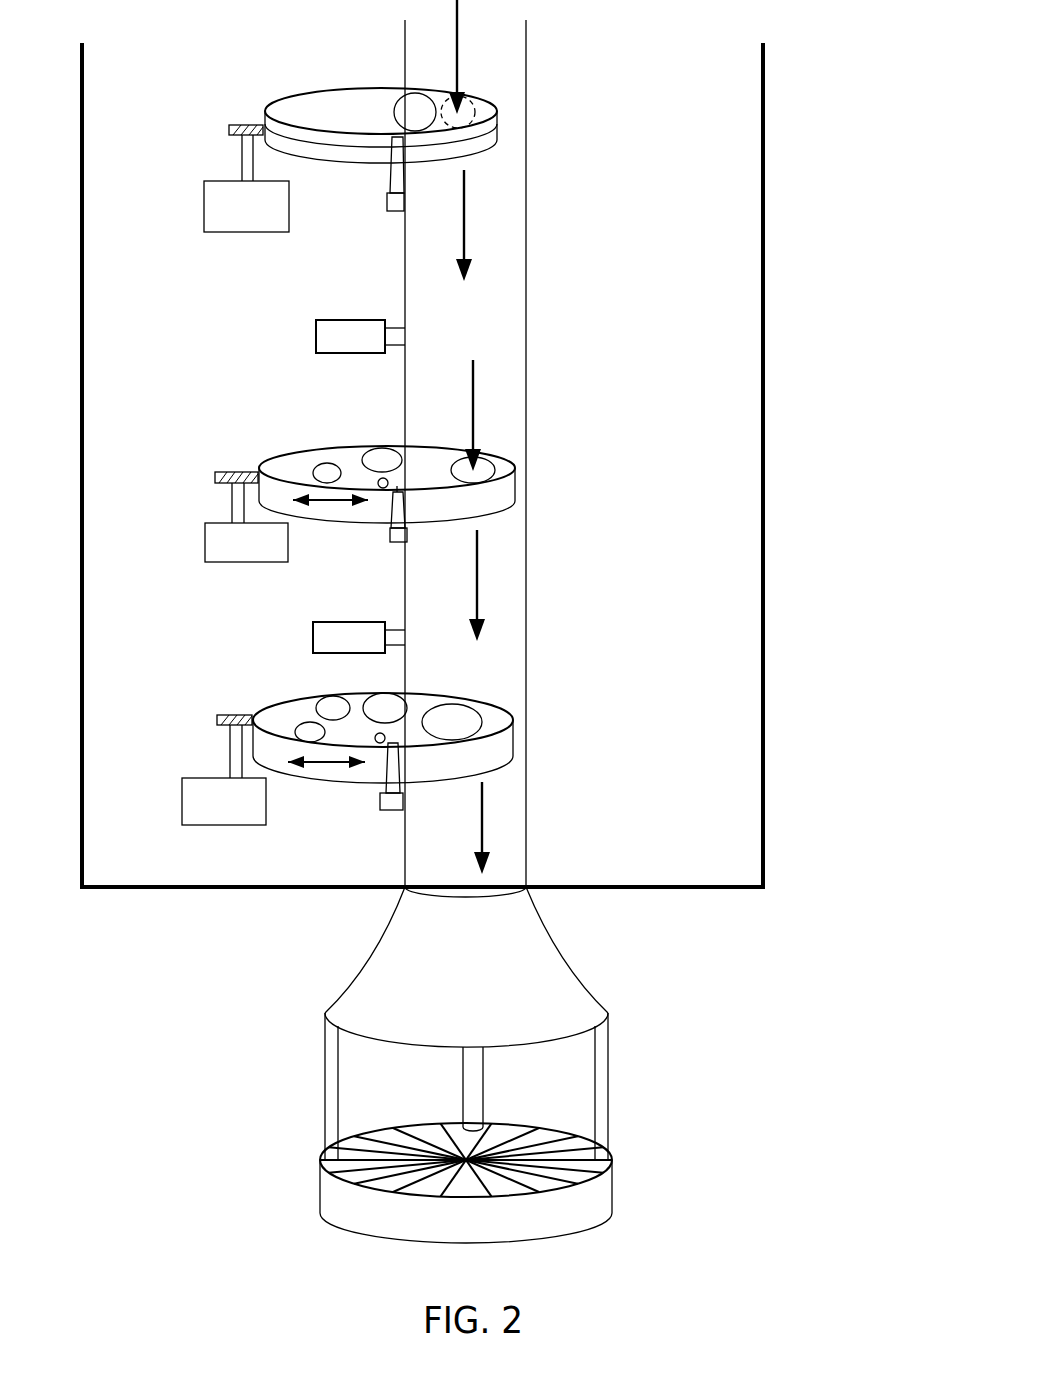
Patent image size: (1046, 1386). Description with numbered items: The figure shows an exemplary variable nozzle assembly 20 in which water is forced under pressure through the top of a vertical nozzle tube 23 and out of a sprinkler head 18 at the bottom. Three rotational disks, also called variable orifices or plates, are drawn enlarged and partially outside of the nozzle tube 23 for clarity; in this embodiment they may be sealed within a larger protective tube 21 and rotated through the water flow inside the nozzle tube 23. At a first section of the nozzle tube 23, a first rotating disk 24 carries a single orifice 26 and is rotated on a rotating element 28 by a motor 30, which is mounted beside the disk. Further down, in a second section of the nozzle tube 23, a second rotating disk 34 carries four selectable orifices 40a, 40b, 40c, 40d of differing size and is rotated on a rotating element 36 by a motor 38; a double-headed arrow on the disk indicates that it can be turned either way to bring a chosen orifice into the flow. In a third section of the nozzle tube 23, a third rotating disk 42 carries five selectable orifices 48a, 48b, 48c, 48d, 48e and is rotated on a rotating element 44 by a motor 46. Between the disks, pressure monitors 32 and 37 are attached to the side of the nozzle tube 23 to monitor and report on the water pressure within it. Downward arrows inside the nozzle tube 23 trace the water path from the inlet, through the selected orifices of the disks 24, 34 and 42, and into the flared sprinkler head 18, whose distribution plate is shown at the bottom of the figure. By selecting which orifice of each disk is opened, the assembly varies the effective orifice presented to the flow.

The sprinkler head 18 is at (604, 1185).
The variable nozzle assembly 20 is at (555, 403).
The protective tube 21 is at (785, 183).
The nozzle tube 23 is at (529, 288).
The first rotating disk 24 is at (478, 146).
The orifice 26 is at (400, 109).
The rotating element 28 is at (391, 212).
The motor 30 is at (206, 222).
The pressure monitor 32 is at (318, 350).
The second rotating disk 34 is at (503, 492).
The rotating element 36 is at (391, 536).
The pressure monitor 37 is at (318, 628).
The motor 38 is at (206, 553).
The selectable orifice 40a is at (379, 480).
The selectable orifice 40b is at (314, 471).
The selectable orifice 40c is at (382, 455).
The selectable orifice 40d is at (493, 473).
The third rotating disk 42 is at (507, 754).
The rotating element 44 is at (388, 811).
The motor 46 is at (205, 824).
The selectable orifice 48a is at (374, 742).
The selectable orifice 48b is at (300, 726).
The selectable orifice 48c is at (330, 707).
The selectable orifice 48d is at (386, 705).
The selectable orifice 48e is at (462, 722).